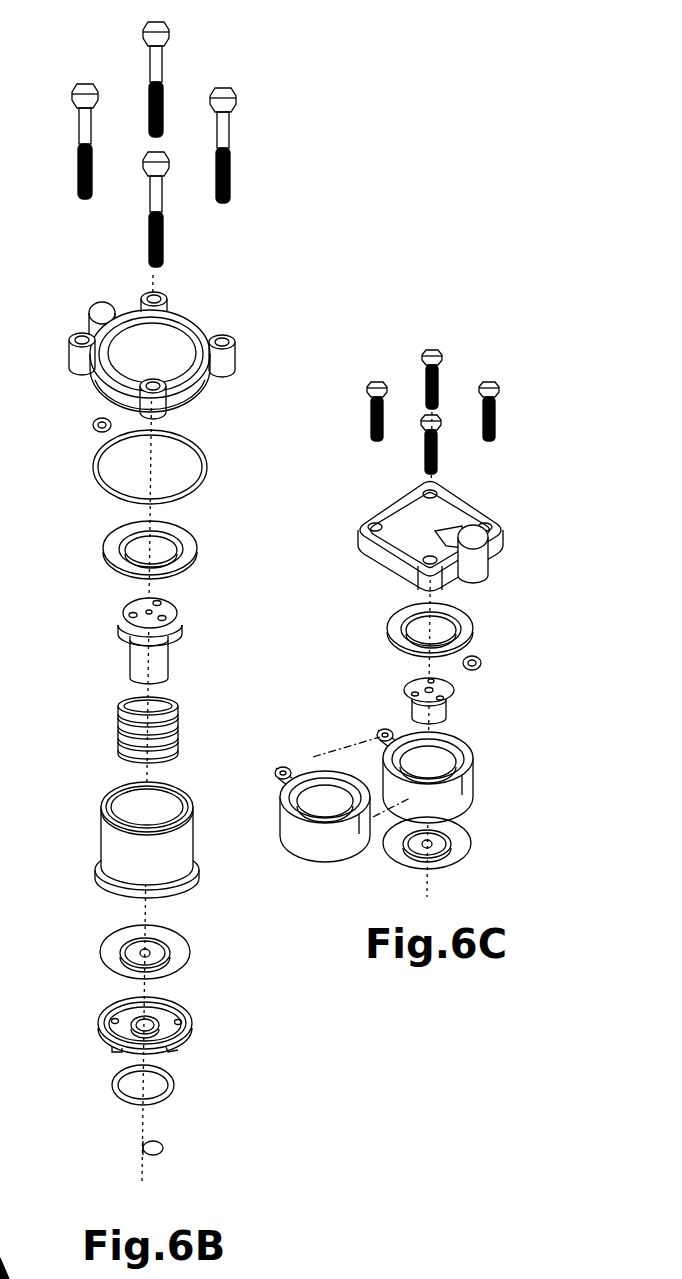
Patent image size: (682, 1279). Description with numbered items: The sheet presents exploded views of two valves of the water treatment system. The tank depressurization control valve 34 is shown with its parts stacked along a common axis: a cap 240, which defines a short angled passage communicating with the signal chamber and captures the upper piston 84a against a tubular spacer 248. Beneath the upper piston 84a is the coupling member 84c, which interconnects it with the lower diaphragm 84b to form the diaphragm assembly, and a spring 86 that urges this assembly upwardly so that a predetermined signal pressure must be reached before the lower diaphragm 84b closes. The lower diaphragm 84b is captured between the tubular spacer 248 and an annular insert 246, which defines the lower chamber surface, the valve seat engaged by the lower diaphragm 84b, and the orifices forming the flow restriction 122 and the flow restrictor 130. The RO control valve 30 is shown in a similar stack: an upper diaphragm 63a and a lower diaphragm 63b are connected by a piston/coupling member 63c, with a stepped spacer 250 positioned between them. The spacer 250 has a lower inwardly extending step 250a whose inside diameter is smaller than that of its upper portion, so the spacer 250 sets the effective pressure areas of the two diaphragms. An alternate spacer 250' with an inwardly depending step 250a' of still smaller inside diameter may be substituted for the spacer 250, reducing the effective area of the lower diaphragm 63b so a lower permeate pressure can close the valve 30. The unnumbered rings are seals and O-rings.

In FIG. 6B, the tank depressurization control valve 34 is at (247, 298).
In FIG. 6B, the cap 240 is at (223, 365).
In FIG. 6B, the upper piston 84a is at (187, 548).
In FIG. 6B, the coupling member 84c is at (163, 657).
In FIG. 6B, the spring 86 is at (175, 730).
In FIG. 6B, the tubular spacer 248 is at (125, 848).
In FIG. 6B, the lower diaphragm 84b is at (180, 947).
In FIG. 6B, the annular insert 246 is at (180, 1023).
In FIG. 6B, the flow restrictor 130 is at (142, 1022).
In FIG. 6B, the flow restriction 122 is at (157, 1030).
In FIG. 6C, the RO control valve 30 is at (520, 502).
In FIG. 6C, the upper diaphragm 63a is at (467, 623).
In FIG. 6C, the piston/coupling member 63c is at (452, 695).
In FIG. 6C, the stepped spacer 250 is at (472, 776).
In FIG. 6C, the lower inwardly extending step 250a is at (472, 776).
In FIG. 6C, the spacer 250' is at (322, 795).
In FIG. 6C, the inwardly depending step 250a' is at (322, 781).
In FIG. 6C, the lower diaphragm 63b is at (463, 838).